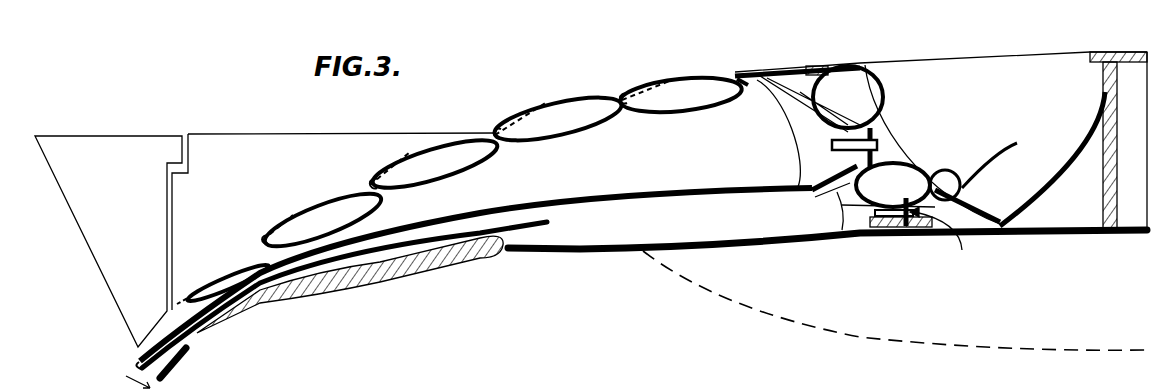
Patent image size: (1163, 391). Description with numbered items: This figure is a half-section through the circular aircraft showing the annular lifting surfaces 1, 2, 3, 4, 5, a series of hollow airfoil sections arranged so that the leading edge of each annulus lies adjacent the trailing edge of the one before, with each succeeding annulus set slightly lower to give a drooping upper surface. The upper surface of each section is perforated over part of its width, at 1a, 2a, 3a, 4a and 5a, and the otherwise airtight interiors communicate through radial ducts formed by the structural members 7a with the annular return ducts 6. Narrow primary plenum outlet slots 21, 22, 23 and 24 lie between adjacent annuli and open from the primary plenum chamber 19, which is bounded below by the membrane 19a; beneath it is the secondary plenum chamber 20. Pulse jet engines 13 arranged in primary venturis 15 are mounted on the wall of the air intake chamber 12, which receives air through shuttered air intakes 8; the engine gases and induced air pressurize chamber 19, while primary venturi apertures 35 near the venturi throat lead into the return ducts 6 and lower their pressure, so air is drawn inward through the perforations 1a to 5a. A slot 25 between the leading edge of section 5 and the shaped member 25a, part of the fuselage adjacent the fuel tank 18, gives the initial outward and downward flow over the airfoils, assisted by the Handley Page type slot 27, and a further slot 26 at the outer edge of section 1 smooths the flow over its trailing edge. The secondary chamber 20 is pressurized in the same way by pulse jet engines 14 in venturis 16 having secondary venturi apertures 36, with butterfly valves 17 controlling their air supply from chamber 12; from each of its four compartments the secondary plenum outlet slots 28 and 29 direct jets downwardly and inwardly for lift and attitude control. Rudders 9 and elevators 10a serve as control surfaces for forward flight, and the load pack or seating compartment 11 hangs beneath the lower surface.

The annular lifting surface 1 is at (240, 278).
The perforated portion 1a is at (183, 300).
The annular lifting surface 2 is at (330, 210).
The perforated portion 2a is at (291, 212).
The annular lifting surface 3 is at (453, 147).
The perforated portion 3a is at (407, 150).
The annular lifting surface 4 is at (579, 110).
The perforated portion 4a is at (541, 104).
The annular lifting surface 5 is at (698, 86).
The perforated portion 5a is at (652, 82).
The annular return duct 6 is at (858, 72).
The radial structural member 7a is at (1130, 212).
The air intake 8 is at (981, 57).
The rudder 9 is at (143, 145).
The elevator 10a is at (174, 372).
The load pack or seating compartment 11 is at (739, 298).
The air intake chamber 12 is at (1020, 130).
The pulse jet engine 13 is at (876, 158).
The pulse jet engine 14 is at (880, 224).
The primary venturi 15 is at (812, 123).
The venturi 16 is at (865, 208).
The butterfly valve 17 is at (948, 241).
The fuel tank 18 is at (812, 70).
The primary plenum chamber 19 is at (632, 166).
The membrane 19a is at (719, 188).
The secondary plenum chamber 20 is at (687, 232).
The primary plenum outlet slot 21 is at (263, 239).
The primary plenum outlet slot 22 is at (373, 183).
The primary plenum outlet slot 23 is at (497, 132).
The primary plenum outlet slot 24 is at (622, 97).
The slot 25 is at (761, 75).
The shaped member 25a is at (757, 71).
The slot 26 is at (139, 362).
The Handley Page type slot 27 is at (727, 74).
The secondary plenum outlet slot 28 is at (511, 252).
The secondary plenum outlet slot 29 is at (203, 334).
The primary venturi aperture 35 is at (872, 128).
The secondary venturi aperture 36 is at (902, 251).